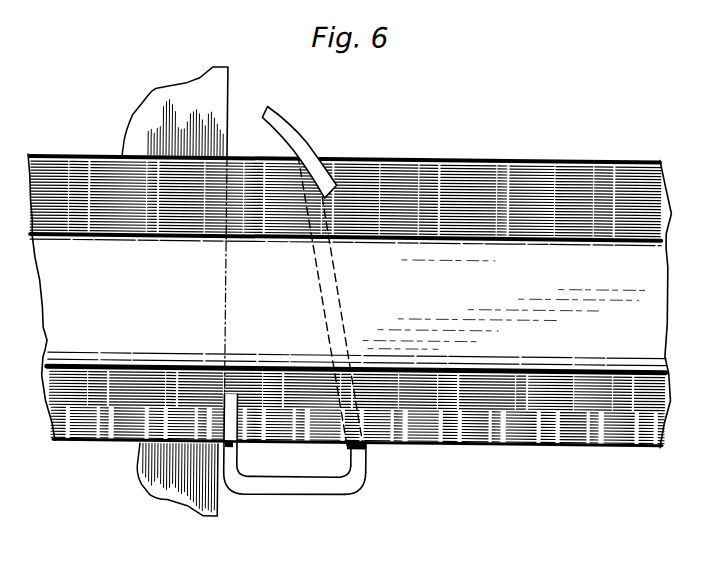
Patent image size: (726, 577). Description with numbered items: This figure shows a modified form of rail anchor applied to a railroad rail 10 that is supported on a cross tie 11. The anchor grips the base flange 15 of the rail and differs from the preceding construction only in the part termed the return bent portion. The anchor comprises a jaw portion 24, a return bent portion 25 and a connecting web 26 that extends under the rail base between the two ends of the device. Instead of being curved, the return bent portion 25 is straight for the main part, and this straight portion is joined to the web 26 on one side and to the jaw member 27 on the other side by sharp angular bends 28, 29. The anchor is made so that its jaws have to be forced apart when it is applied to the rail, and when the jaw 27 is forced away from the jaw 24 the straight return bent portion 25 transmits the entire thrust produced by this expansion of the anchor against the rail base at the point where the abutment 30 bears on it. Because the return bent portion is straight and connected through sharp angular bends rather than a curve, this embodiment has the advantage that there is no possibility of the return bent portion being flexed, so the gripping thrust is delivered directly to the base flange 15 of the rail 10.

The railroad rail 10 is at (503, 258).
The cross tie 11 is at (181, 100).
The base flange 15 is at (426, 178).
The jaw portion 24 is at (297, 139).
The return bent portion 25 is at (320, 482).
The connecting web 26 is at (330, 300).
The jaw member 27 is at (230, 446).
The sharp angular bend 28 is at (365, 467).
The sharp angular bend 29 is at (238, 468).
The abutment 30 is at (370, 434).